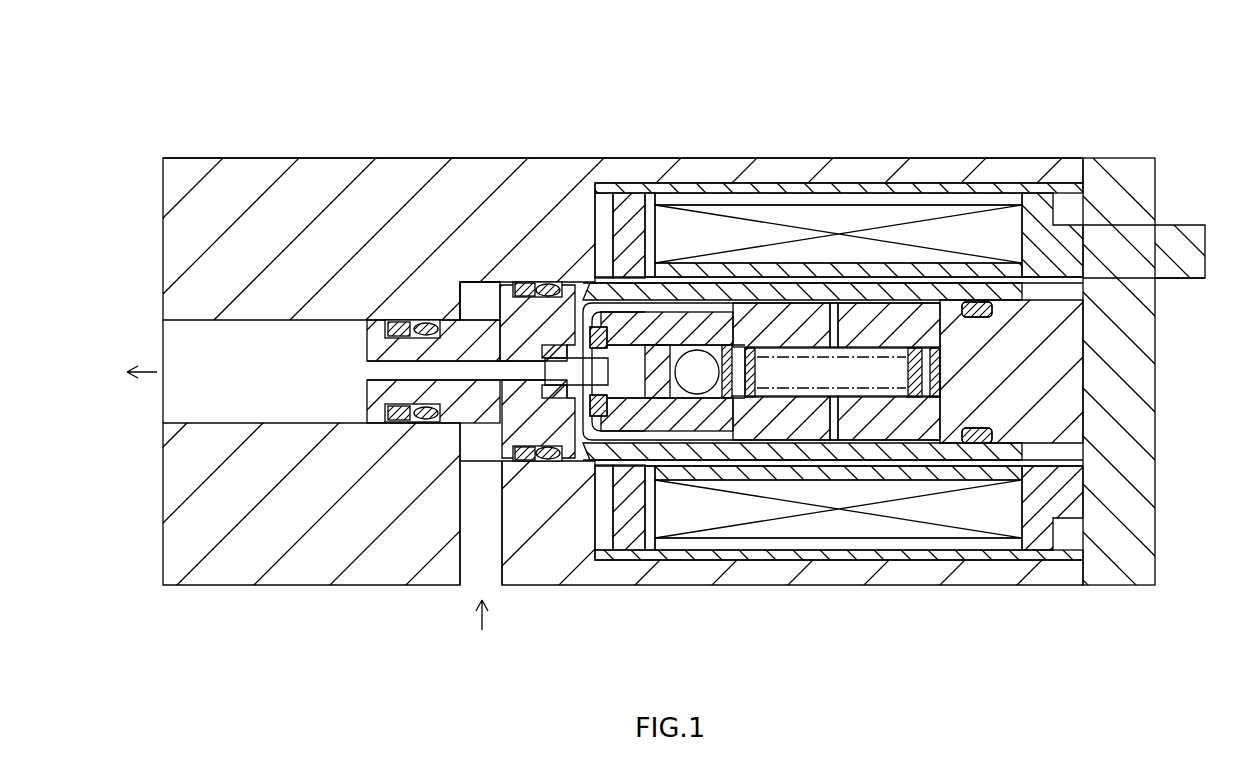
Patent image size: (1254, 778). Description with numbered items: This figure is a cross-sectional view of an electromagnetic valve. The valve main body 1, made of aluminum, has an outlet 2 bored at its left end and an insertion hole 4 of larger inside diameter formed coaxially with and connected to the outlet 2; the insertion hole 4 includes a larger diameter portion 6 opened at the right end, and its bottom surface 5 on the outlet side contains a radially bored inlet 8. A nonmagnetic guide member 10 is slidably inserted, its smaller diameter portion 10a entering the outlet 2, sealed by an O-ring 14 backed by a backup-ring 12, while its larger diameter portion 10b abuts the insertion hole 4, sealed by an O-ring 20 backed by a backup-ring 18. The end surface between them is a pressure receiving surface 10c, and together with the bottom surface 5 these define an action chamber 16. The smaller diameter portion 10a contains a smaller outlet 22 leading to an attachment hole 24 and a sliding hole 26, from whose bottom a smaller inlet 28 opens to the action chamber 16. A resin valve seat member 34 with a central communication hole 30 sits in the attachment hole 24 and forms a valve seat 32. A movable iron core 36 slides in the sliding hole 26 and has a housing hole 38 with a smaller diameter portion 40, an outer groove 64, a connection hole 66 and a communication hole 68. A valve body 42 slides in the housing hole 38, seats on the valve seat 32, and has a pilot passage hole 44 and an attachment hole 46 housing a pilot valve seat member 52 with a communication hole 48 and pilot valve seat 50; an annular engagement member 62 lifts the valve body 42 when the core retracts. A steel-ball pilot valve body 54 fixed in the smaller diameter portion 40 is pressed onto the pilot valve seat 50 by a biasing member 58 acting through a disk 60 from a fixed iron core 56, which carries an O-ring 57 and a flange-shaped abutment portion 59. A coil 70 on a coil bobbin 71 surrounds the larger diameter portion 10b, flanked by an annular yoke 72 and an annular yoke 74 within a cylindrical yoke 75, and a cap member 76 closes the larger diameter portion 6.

The valve main body 1 is at (380, 218).
The outlet 2 is at (200, 322).
The insertion hole 4 is at (499, 284).
The bottom surface 5 is at (465, 485).
The larger diameter portion 6 is at (612, 255).
The inlet 8 is at (480, 500).
The guide member 10 is at (875, 178).
The smaller diameter portion 10a is at (378, 425).
The larger diameter portion 10b is at (1036, 292).
The pressure receiving surface 10c is at (485, 302).
The backup-ring 12 is at (398, 421).
The O-ring 14 is at (440, 422).
The action chamber 16 is at (473, 302).
The backup-ring 18 is at (552, 283).
The O-ring 20 is at (535, 462).
The smaller outlet 22 is at (365, 371).
The attachment hole 24 is at (552, 462).
The sliding hole 26 is at (835, 442).
The smaller inlet 28 is at (520, 462).
The communication hole 30 is at (522, 284).
The valve seat 32 is at (568, 400).
The valve seat member 34 is at (602, 252).
The movable iron core 36 is at (812, 287).
The housing hole 38 is at (660, 432).
The smaller diameter portion 40 is at (912, 423).
The valve body 42 is at (640, 242).
The pilot passage hole 44 is at (660, 343).
The attachment hole 46 is at (699, 396).
The communication hole 48 is at (750, 346).
The pilot valve seat 50 is at (740, 400).
The pilot valve seat member 52 is at (727, 343).
The pilot valve body 54 is at (750, 442).
The fixed iron core 56 is at (1000, 432).
The O-ring 57 is at (1068, 158).
The biasing member 58 is at (980, 292).
The abutment portion 59 is at (1120, 158).
The disk 60 is at (790, 302).
The engagement member 62 is at (600, 418).
The groove 64 is at (852, 442).
The connection hole 66 is at (732, 400).
The communication hole 68 is at (795, 442).
The coil 70 is at (905, 224).
The coil bobbin 71 is at (1000, 543).
The annular yoke 72 is at (628, 492).
The annular yoke 74 is at (1078, 562).
The cylindrical yoke 75 is at (1050, 545).
The cap member 76 is at (1130, 568).